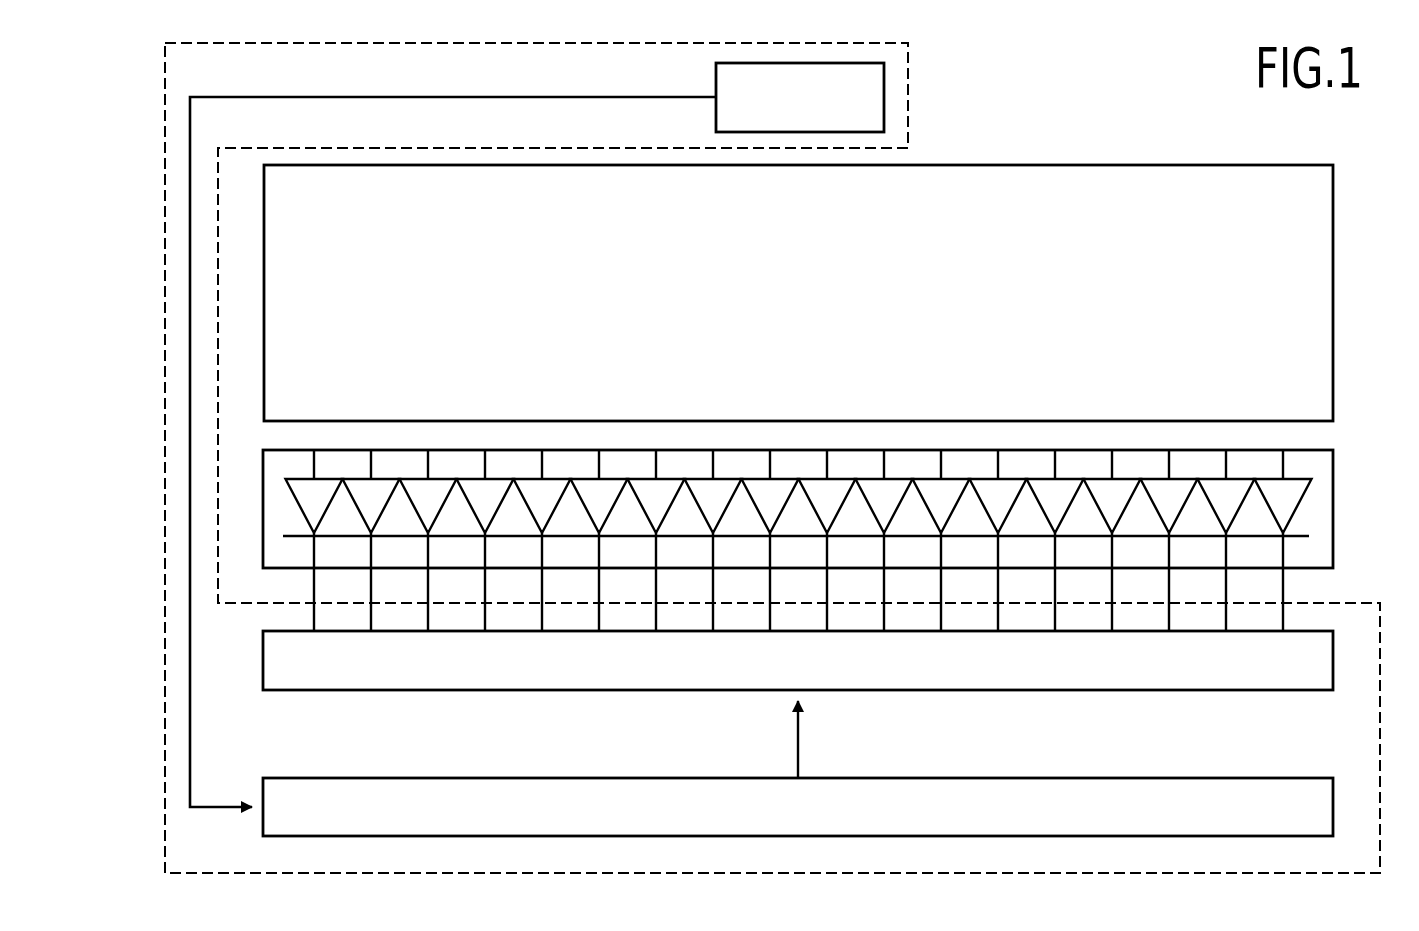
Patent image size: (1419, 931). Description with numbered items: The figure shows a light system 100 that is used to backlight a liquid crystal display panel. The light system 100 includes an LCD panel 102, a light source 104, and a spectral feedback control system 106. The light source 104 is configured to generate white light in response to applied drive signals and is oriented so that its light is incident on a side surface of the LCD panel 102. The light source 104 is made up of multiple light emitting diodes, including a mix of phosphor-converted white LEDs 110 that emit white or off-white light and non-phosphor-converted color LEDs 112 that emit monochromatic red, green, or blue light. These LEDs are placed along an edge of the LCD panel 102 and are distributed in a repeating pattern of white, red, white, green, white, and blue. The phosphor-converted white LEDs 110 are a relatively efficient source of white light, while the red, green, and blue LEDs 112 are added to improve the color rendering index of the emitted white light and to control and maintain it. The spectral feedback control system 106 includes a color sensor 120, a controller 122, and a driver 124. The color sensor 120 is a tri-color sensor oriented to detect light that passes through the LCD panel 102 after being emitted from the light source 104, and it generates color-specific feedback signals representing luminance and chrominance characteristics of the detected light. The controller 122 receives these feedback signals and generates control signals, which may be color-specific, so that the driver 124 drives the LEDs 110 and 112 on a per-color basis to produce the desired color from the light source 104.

The light system 100 is at (1050, 99).
The LCD panel 102 is at (767, 349).
The light source 104 is at (1334, 490).
The spectral feedback control system 106 is at (1380, 603).
The phosphor-converted white LEDs 110 is at (297, 496).
The non-phosphor-converted color LEDs 112 is at (354, 496).
The color sensor 120 is at (832, 111).
The controller 122 is at (935, 826).
The driver 124 is at (935, 679).